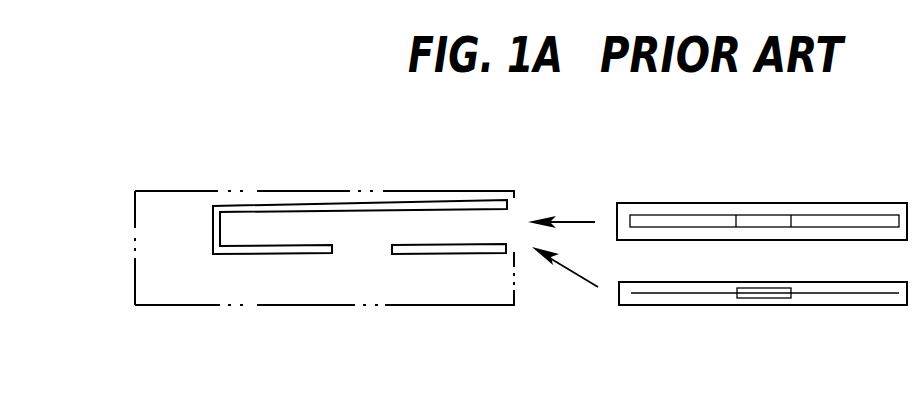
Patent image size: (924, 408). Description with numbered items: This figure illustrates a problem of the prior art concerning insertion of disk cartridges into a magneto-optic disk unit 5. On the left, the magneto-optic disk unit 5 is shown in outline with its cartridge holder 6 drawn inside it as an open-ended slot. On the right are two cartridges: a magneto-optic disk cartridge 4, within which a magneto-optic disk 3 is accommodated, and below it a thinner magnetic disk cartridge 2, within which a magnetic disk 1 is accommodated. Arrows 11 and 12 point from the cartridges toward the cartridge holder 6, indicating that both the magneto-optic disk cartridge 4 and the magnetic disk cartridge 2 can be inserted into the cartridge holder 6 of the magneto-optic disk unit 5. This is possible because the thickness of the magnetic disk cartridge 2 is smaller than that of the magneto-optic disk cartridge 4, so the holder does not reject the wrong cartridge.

The magnetic disk 1 is at (821, 293).
The magnetic disk cartridge 2 is at (888, 305).
The magneto-optic disk 3 is at (816, 218).
The magneto-optic disk cartridge 4 is at (880, 203).
The magneto-optic disk unit 5 is at (197, 190).
The cartridge holder 6 is at (340, 205).
The arrow 11 is at (568, 222).
The arrow 12 is at (572, 272).